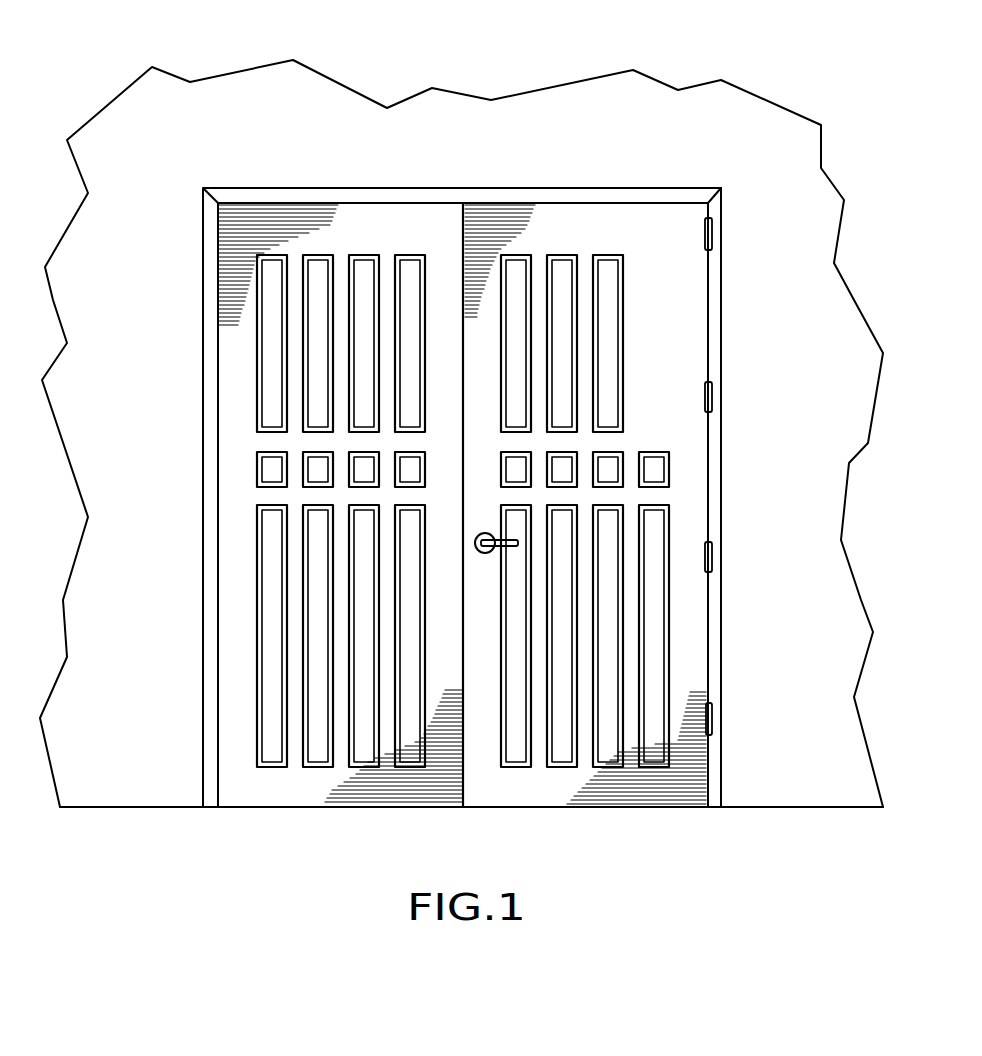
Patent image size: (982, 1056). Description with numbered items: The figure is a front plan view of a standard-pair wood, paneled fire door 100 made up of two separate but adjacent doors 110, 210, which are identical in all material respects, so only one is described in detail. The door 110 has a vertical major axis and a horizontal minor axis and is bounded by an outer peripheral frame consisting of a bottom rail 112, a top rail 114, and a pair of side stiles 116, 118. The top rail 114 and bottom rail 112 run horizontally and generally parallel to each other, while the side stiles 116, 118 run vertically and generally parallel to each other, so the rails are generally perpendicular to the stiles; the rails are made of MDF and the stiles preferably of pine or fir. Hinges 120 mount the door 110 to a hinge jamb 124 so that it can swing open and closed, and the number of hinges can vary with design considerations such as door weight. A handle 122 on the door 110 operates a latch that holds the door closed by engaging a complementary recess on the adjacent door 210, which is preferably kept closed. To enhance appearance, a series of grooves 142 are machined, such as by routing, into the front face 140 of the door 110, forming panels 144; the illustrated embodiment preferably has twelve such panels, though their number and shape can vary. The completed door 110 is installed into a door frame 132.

The fire door 100 is at (672, 168).
The door 110 is at (692, 452).
The bottom rail 112 is at (589, 794).
The top rail 114 is at (539, 243).
The side stile 116 is at (485, 270).
The side stile 118 is at (688, 692).
The hinges 120 is at (711, 240).
The handle 122 is at (485, 553).
The hinge jamb 124 is at (716, 668).
The door frame 132 is at (348, 182).
The front face 140 is at (629, 258).
The grooves 142 is at (654, 453).
The panels 144 is at (563, 267).
The door 210 is at (245, 440).